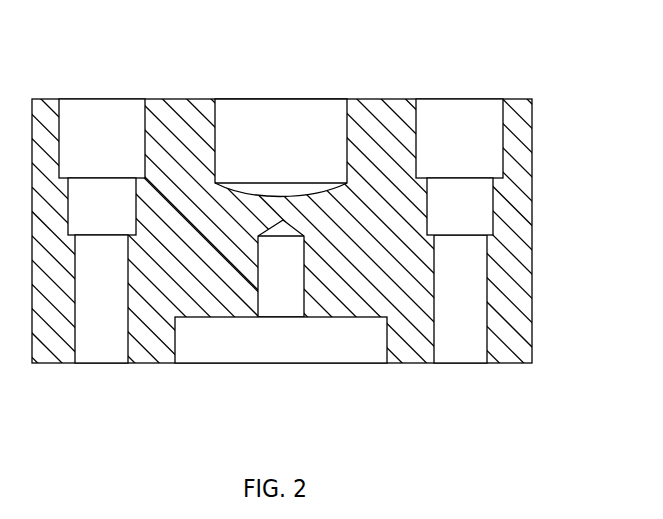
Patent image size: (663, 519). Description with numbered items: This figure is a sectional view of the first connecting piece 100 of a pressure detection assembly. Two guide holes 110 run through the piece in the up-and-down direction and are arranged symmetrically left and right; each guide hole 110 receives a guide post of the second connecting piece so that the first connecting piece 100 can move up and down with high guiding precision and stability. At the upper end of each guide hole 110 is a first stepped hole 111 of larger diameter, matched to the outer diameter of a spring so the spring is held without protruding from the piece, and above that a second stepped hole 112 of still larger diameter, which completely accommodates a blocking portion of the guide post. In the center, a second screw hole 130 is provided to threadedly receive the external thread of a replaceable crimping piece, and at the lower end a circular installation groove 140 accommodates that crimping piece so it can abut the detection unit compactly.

The first connecting piece 100 is at (388, 123).
The guide hole 110 is at (470, 300).
The first stepped hole 111 is at (477, 207).
The second stepped hole 112 is at (468, 142).
The second screw hole 130 is at (285, 290).
The installation groove 140 is at (195, 343).